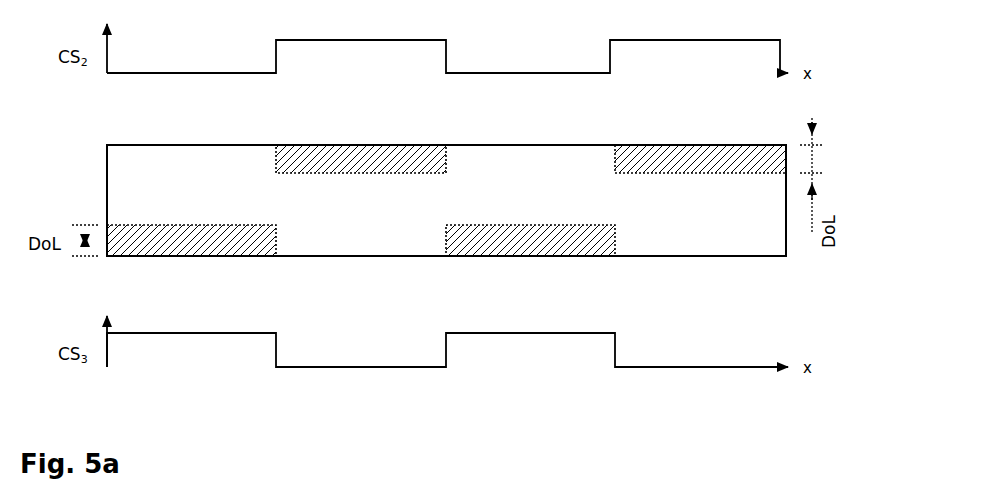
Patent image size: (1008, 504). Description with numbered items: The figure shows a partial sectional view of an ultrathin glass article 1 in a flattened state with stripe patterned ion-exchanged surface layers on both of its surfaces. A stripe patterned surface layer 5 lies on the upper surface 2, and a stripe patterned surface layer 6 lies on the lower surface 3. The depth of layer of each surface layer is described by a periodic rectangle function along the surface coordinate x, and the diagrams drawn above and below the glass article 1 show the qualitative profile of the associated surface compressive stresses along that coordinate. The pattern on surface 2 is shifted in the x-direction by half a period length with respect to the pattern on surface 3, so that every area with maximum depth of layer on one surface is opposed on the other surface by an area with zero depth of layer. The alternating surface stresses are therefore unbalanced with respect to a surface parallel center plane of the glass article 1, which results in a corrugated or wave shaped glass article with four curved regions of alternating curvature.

The glass article 1 is at (738, 200).
The surface 2 is at (750, 134).
The surface 3 is at (739, 268).
The stripe patterned surface layer 5 is at (325, 155).
The stripe patterned surface layer 6 is at (470, 252).